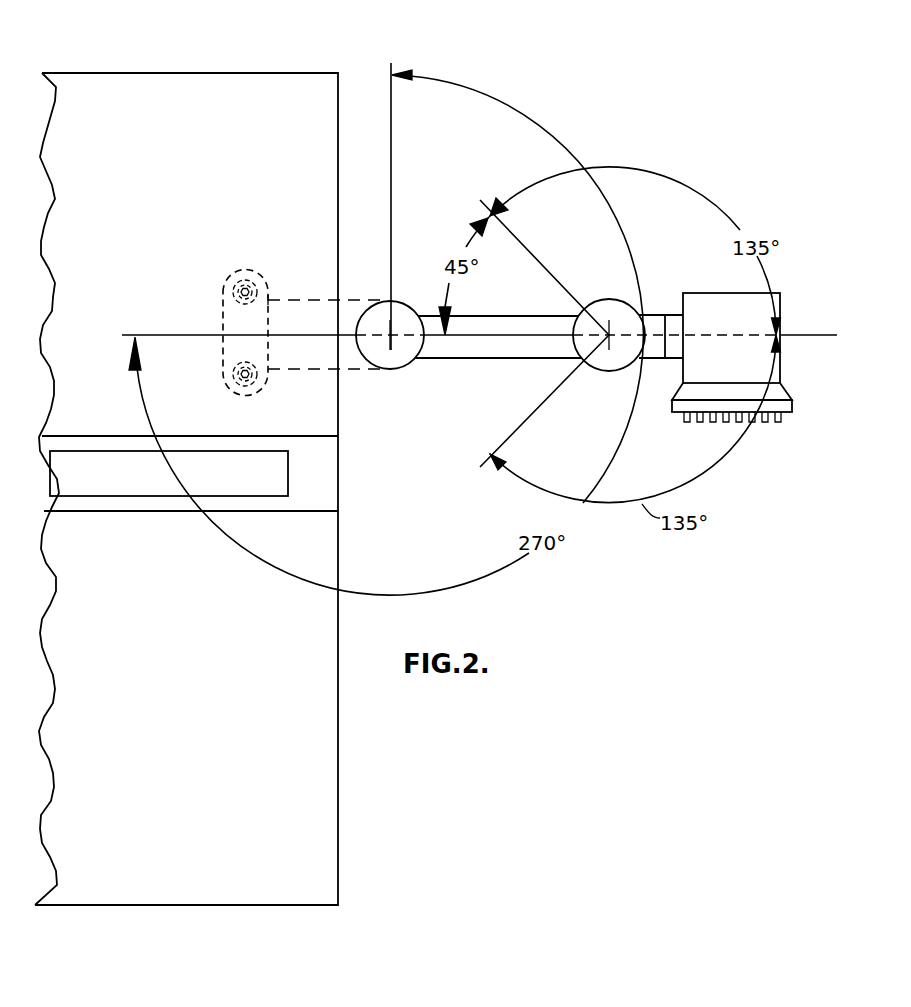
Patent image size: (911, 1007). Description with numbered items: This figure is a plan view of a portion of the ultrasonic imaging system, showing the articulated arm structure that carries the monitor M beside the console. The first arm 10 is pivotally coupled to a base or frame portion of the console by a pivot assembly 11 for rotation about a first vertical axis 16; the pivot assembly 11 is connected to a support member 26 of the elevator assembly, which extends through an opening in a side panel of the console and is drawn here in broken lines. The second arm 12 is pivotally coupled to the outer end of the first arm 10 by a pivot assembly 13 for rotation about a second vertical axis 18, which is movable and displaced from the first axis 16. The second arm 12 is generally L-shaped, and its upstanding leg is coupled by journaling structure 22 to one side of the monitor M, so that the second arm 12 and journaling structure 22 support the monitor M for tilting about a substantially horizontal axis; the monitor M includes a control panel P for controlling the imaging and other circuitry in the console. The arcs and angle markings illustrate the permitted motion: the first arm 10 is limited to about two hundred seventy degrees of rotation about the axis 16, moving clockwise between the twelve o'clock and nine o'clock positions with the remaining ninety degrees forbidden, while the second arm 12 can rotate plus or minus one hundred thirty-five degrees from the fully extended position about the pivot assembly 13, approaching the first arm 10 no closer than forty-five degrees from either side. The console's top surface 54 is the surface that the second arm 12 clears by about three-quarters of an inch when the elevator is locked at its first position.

The top surface 54 is at (212, 83).
The support member 26 is at (306, 300).
The first vertical axis 16 is at (392, 328).
The pivot assembly 11 is at (383, 370).
The first arm 10 is at (479, 360).
The second vertical axis 18 is at (606, 328).
The pivot assembly 13 is at (607, 372).
The second arm 12 is at (647, 362).
The journaling structure 22 is at (670, 314).
The monitor M is at (720, 293).
The control panel P is at (687, 436).